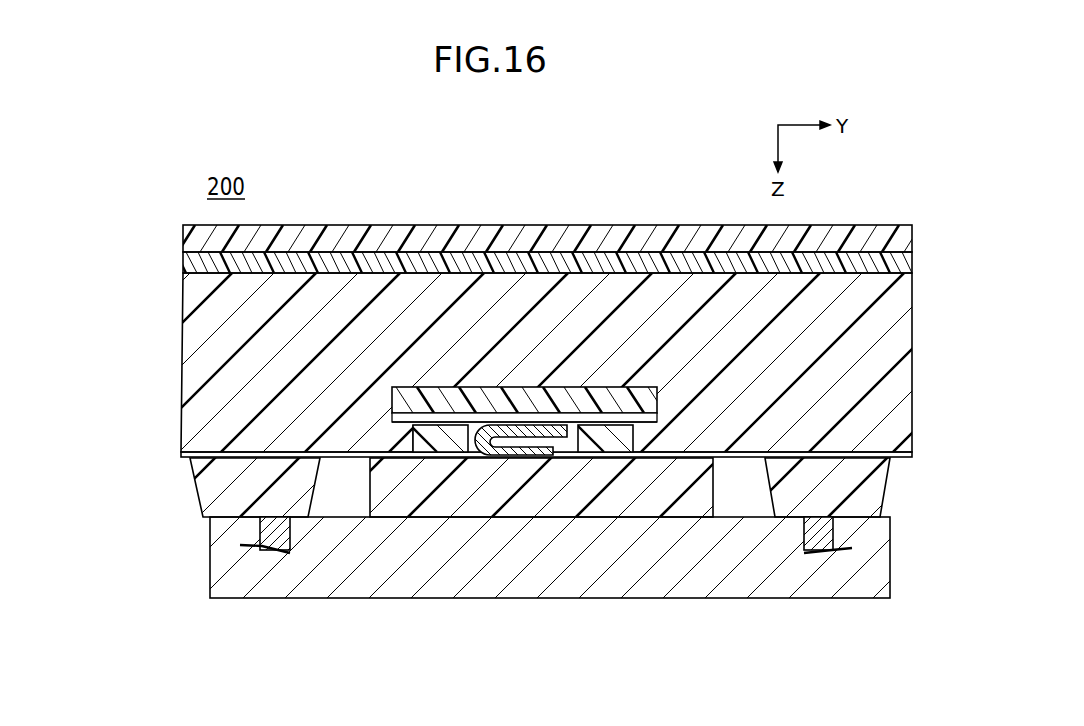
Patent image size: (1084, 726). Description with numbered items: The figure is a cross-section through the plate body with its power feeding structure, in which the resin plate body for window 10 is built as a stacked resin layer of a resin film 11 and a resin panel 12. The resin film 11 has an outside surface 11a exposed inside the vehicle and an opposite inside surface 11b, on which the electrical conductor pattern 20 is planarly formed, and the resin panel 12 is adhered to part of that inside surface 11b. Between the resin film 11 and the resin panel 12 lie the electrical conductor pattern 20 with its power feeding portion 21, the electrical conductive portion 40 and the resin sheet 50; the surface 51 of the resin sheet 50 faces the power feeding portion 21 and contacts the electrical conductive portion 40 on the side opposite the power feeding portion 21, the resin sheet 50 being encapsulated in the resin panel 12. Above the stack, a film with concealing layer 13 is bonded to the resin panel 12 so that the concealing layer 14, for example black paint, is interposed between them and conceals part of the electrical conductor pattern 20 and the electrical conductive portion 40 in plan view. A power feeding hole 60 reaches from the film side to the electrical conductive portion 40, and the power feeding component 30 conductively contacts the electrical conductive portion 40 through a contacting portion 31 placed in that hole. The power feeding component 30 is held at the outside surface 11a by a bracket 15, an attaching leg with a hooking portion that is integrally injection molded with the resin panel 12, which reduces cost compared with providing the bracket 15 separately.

The resin plate body for window 10 is at (105, 225).
The film with concealing layer 13 is at (183, 228).
The concealing layer 14 is at (183, 261).
The resin panel 12 is at (183, 300).
The resin film 11 is at (413, 448).
The outside surface 11a is at (348, 457).
The inside surface 11b is at (413, 428).
The surface of resin sheet 51 is at (548, 418).
The resin sheet 50 is at (445, 417).
The electrical conductive portion 40 is at (392, 404).
The electrical conductor pattern 20 is at (510, 536).
The power feeding portion 21 is at (438, 425).
The power feeding hole 60 is at (551, 440).
The contacting portion 31 is at (503, 452).
The power feeding component 30 is at (717, 580).
The bracket 15 is at (273, 543).